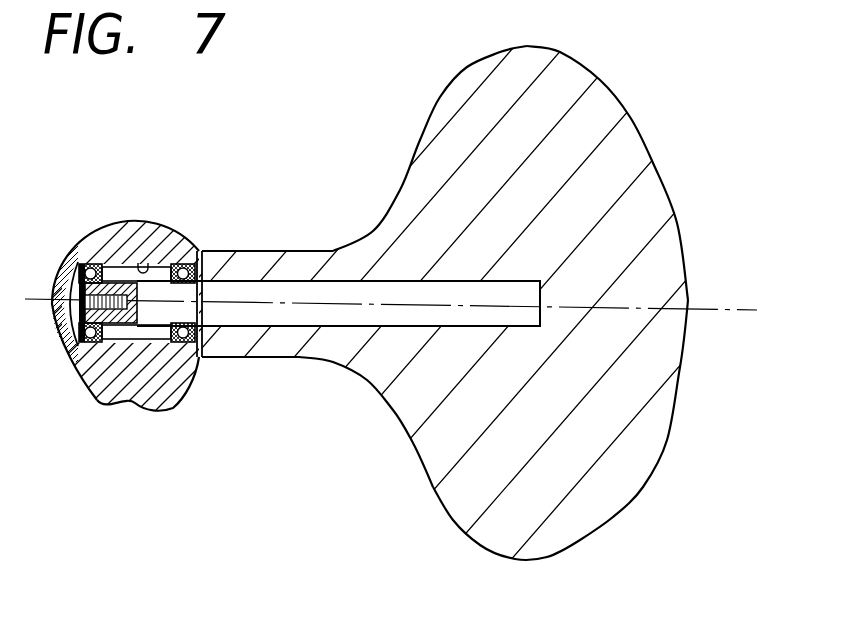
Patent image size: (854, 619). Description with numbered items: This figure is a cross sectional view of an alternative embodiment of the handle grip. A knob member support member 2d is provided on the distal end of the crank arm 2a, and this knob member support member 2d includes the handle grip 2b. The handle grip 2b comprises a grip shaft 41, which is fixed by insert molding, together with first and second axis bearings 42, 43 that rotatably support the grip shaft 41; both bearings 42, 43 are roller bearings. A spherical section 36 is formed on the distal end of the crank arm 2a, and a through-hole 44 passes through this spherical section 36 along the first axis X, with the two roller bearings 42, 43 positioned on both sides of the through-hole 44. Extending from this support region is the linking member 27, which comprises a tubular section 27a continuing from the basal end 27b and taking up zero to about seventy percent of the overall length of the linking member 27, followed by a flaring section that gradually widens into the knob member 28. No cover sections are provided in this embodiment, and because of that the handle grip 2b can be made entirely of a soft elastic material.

The crank arm 2a is at (107, 393).
The handle grip 2b is at (366, 196).
The knob member support member 2d is at (141, 236).
The linking member 27 is at (292, 258).
The tubular section 27a is at (272, 358).
The basal end 27b is at (373, 387).
The knob member 28 is at (647, 137).
The spherical section 36 is at (110, 238).
The grip shaft 41 is at (150, 312).
The first axis bearing 42 is at (98, 245).
The second axis bearing 43 is at (170, 262).
The through-hole 44 is at (147, 260).
The first axis X is at (725, 306).